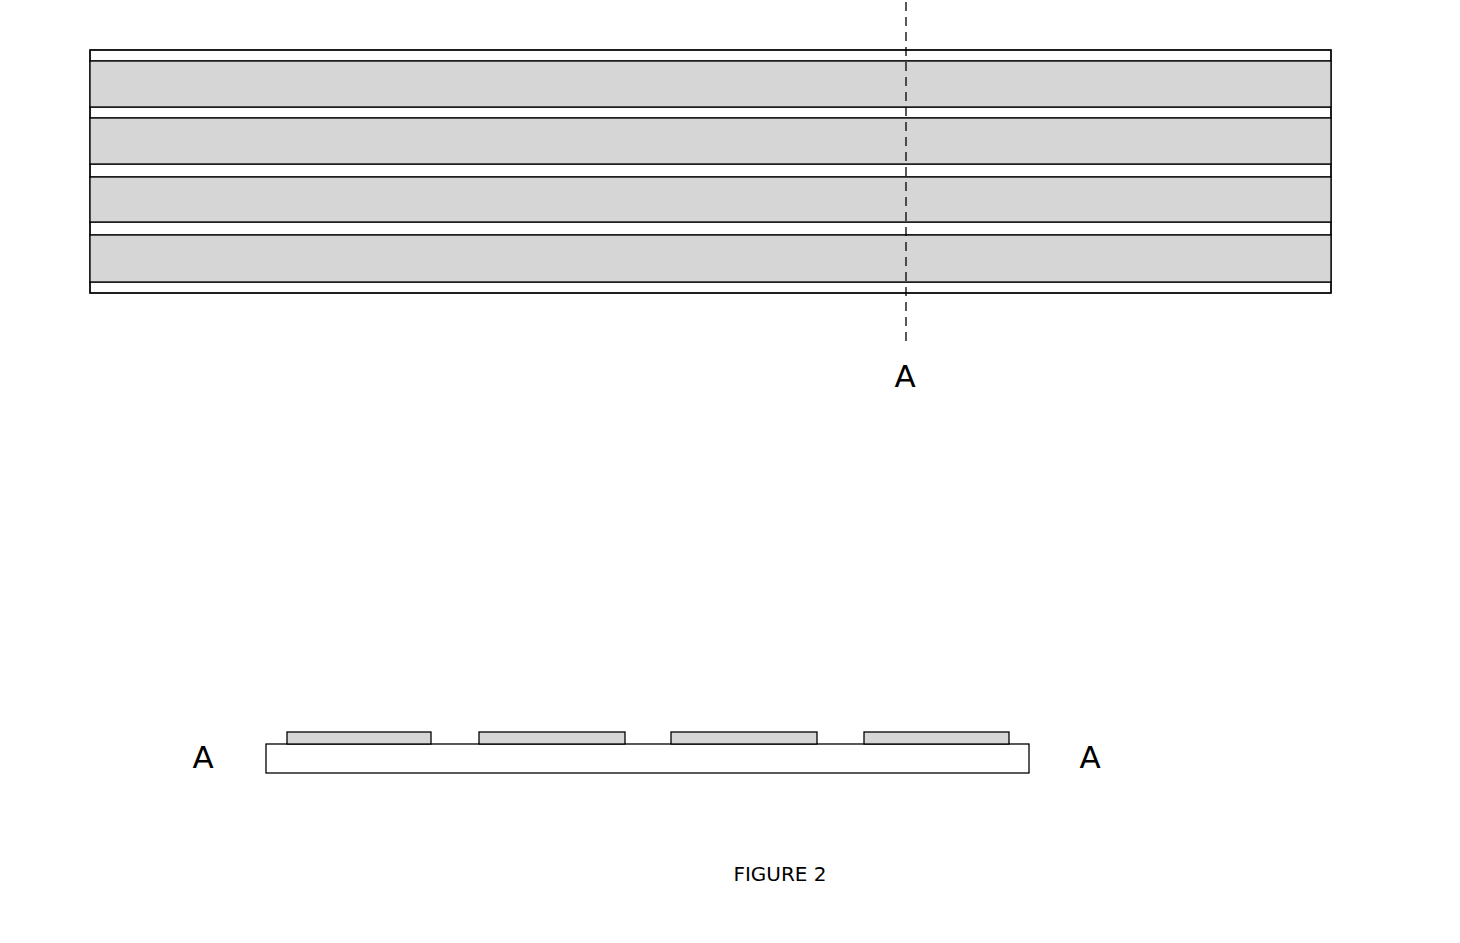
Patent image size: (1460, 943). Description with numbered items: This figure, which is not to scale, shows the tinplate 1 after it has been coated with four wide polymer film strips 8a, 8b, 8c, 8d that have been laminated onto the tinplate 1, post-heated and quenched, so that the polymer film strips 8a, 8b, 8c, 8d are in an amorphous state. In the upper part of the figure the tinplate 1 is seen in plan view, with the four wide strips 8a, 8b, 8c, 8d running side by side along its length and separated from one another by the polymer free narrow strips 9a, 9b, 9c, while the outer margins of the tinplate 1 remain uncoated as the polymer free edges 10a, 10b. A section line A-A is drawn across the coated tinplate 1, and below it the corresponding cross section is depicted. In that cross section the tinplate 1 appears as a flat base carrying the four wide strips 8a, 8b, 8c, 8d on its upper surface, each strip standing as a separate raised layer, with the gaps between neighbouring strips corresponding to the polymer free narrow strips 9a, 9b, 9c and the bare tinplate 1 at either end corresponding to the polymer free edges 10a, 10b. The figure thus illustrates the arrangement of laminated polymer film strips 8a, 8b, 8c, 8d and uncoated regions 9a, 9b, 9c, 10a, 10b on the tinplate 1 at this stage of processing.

The tinplate 1 is at (1262, 297).
The wide strip 8a is at (728, 100).
The wide strip 8b is at (728, 159).
The wide strip 8c is at (728, 217).
The wide strip 8d is at (728, 275).
The polymer free narrow strip 9a is at (1333, 113).
The polymer free narrow strip 9b is at (1333, 172).
The polymer free narrow strip 9c is at (1333, 227).
The polymer free edge 10a is at (1333, 57).
The polymer free edge 10b is at (1333, 283).